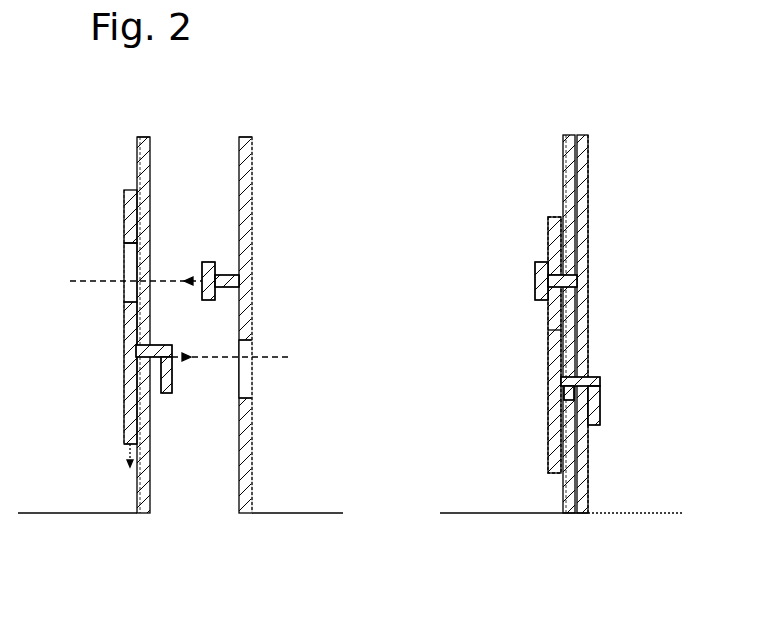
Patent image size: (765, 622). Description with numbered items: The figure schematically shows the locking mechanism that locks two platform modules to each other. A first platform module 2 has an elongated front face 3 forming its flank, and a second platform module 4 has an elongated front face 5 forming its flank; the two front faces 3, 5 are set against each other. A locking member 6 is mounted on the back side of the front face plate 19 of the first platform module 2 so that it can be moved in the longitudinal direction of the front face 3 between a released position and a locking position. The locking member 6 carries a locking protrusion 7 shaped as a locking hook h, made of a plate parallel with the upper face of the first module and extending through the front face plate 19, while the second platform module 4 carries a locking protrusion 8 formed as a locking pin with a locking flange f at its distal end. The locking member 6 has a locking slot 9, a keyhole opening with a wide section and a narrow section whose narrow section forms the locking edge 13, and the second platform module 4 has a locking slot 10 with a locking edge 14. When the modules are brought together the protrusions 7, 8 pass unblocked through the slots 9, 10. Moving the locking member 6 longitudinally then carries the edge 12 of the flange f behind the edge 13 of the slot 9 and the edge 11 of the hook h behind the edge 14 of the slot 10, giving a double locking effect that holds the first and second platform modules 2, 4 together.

The first platform module 2 is at (112, 513).
The front face 3 is at (150, 197).
The second platform module 4 is at (273, 514).
The front face 5 is at (240, 158).
The locking member 6 is at (125, 420).
The locking protrusion 7 is at (172, 349).
The locking protrusion 8 is at (215, 292).
The locking slot 9 is at (127, 289).
The locking slot 10 is at (245, 348).
The edge 11 is at (158, 396).
The edge 12 is at (207, 266).
The edge 13 is at (124, 240).
The edge 14 is at (253, 410).
The front face plate 19 is at (147, 135).
The locking flange f is at (204, 273).
The locking hook h is at (173, 383).